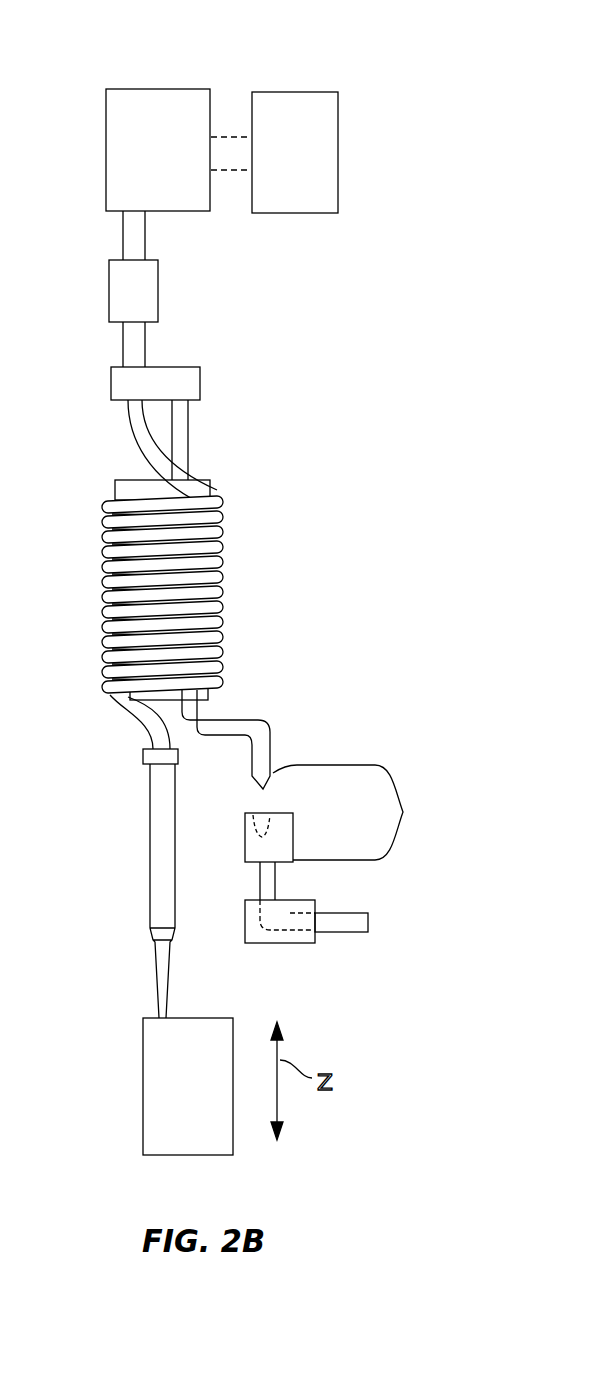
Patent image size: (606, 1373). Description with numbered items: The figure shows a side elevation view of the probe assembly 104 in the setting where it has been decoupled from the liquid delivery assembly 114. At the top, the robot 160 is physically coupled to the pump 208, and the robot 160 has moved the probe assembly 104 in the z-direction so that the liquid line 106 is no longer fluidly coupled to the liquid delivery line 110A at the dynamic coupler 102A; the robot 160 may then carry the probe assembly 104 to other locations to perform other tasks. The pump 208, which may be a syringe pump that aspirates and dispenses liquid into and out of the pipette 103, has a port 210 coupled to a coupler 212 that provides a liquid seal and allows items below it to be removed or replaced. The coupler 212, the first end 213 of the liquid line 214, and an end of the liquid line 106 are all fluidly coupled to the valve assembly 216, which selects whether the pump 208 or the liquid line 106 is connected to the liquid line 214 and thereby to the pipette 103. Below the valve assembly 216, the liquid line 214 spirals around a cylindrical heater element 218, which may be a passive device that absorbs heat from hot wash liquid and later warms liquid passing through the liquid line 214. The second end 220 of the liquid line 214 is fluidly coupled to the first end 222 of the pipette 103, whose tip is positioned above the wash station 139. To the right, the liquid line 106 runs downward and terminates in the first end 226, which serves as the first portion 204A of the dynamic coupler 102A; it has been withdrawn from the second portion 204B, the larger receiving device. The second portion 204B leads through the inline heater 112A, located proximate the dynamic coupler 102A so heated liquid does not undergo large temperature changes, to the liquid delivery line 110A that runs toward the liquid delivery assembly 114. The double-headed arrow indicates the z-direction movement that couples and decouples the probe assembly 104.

The probe assembly 104 is at (92, 63).
The robot 160 is at (297, 91).
The pump 208 is at (106, 127).
The port 210 is at (123, 223).
The coupler 212 is at (109, 287).
The valve assembly 216 is at (190, 367).
The first end of liquid line 213 is at (132, 451).
The liquid line 214 is at (128, 407).
The liquid line 106 is at (188, 448).
The heater element 218 is at (120, 478).
The second end of liquid line 220 is at (152, 732).
The first end of pipette 222 is at (149, 777).
The pipette 103 is at (149, 843).
The wash station 139 is at (143, 1080).
The first portion 204A is at (260, 783).
The first end 226 is at (272, 782).
The dynamic coupler 102A is at (404, 812).
The second portion 204B is at (293, 823).
The inline heater 112A is at (302, 943).
The liquid delivery line 110A is at (360, 933).
The liquid delivery assembly 114 is at (372, 922).